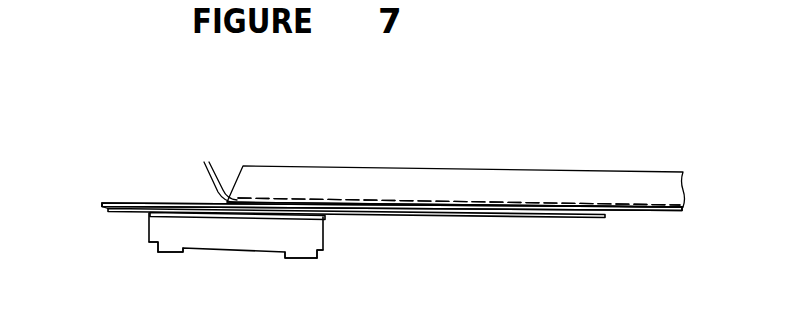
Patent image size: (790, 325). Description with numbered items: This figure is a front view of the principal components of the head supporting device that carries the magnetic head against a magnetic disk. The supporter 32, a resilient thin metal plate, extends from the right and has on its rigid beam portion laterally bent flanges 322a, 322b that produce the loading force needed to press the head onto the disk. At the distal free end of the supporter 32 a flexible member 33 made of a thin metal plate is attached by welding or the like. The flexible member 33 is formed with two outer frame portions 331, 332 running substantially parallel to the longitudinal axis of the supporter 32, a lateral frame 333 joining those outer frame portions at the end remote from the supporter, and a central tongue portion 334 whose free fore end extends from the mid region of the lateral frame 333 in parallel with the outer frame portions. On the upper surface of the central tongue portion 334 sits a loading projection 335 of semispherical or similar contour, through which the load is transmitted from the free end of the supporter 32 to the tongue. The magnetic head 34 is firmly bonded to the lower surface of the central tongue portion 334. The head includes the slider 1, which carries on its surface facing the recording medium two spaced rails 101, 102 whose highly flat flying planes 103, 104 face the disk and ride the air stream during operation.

The slider 1 is at (222, 235).
The rail 101 is at (157, 248).
The rail 102 is at (318, 253).
The flying plane 103 is at (173, 257).
The flying plane 104 is at (293, 260).
The magnetic head 34 is at (327, 234).
The outer frame portion 331 is at (147, 203).
The outer frame portion 332 is at (392, 207).
The lateral frame 333 is at (115, 212).
The flexible member 33 is at (480, 215).
The loading projection 335 is at (239, 208).
The central tongue portion 334 is at (297, 217).
The supporter 32 is at (443, 166).
The flange 322a is at (552, 188).
The flange 322b is at (455, 204).